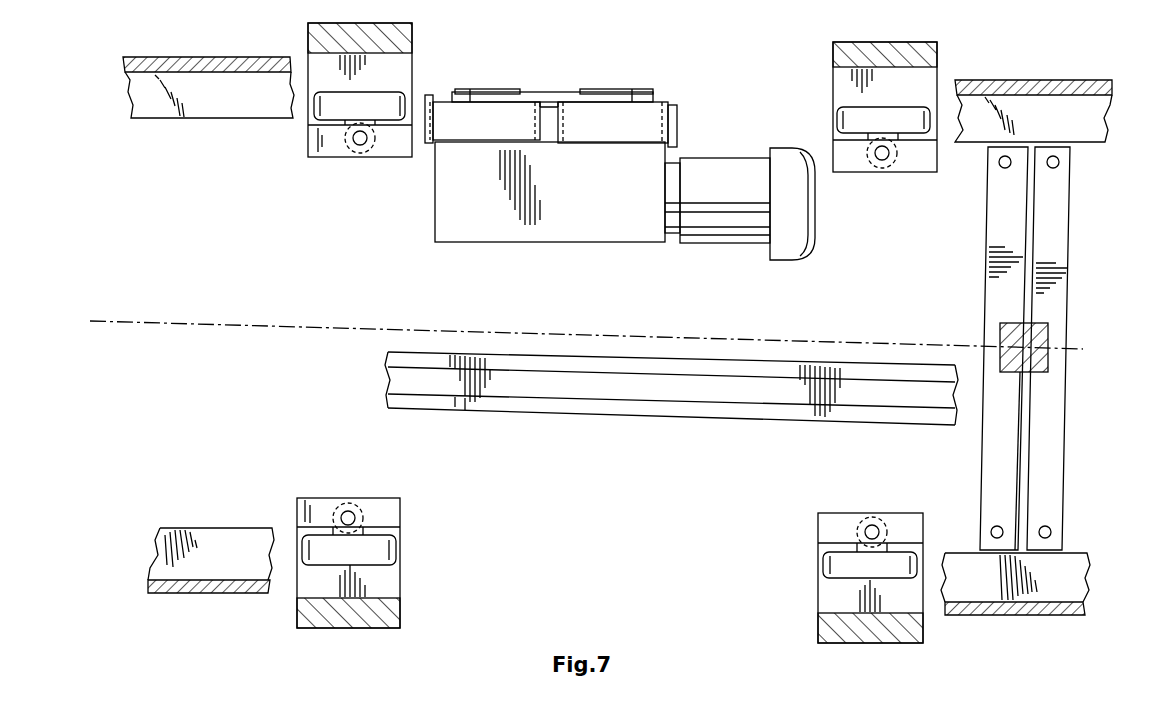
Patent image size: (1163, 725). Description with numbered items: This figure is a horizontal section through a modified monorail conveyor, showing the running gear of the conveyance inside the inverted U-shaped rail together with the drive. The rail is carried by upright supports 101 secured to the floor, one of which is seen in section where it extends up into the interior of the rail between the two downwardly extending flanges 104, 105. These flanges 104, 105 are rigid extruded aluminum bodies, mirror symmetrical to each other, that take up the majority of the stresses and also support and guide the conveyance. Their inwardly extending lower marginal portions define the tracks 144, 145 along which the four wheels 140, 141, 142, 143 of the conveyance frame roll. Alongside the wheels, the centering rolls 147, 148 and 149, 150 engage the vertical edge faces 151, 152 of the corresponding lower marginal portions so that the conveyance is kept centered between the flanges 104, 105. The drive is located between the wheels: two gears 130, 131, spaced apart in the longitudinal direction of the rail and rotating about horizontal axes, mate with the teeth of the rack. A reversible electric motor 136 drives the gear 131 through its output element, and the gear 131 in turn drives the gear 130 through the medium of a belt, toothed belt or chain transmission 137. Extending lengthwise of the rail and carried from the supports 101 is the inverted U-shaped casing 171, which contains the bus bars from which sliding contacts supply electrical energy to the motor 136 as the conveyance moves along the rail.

The upright support 101 is at (1000, 340).
The flange 104 is at (222, 58).
The flange 105 is at (200, 590).
The gear 130 is at (438, 100).
The gear 131 is at (660, 118).
The reversible electric motor 136 is at (733, 165).
The transmission 137 is at (553, 97).
The wheel 140 is at (393, 120).
The wheel 141 is at (915, 135).
The wheel 142 is at (393, 550).
The wheel 143 is at (905, 560).
The track 144 is at (217, 91).
The track 145 is at (220, 550).
The centering roll 147 is at (350, 157).
The centering roll 148 is at (885, 165).
The centering roll 149 is at (348, 503).
The centering roll 150 is at (865, 520).
The vertical edge face 151 is at (163, 118).
The vertical edge face 152 is at (180, 528).
The casing 171 is at (653, 412).